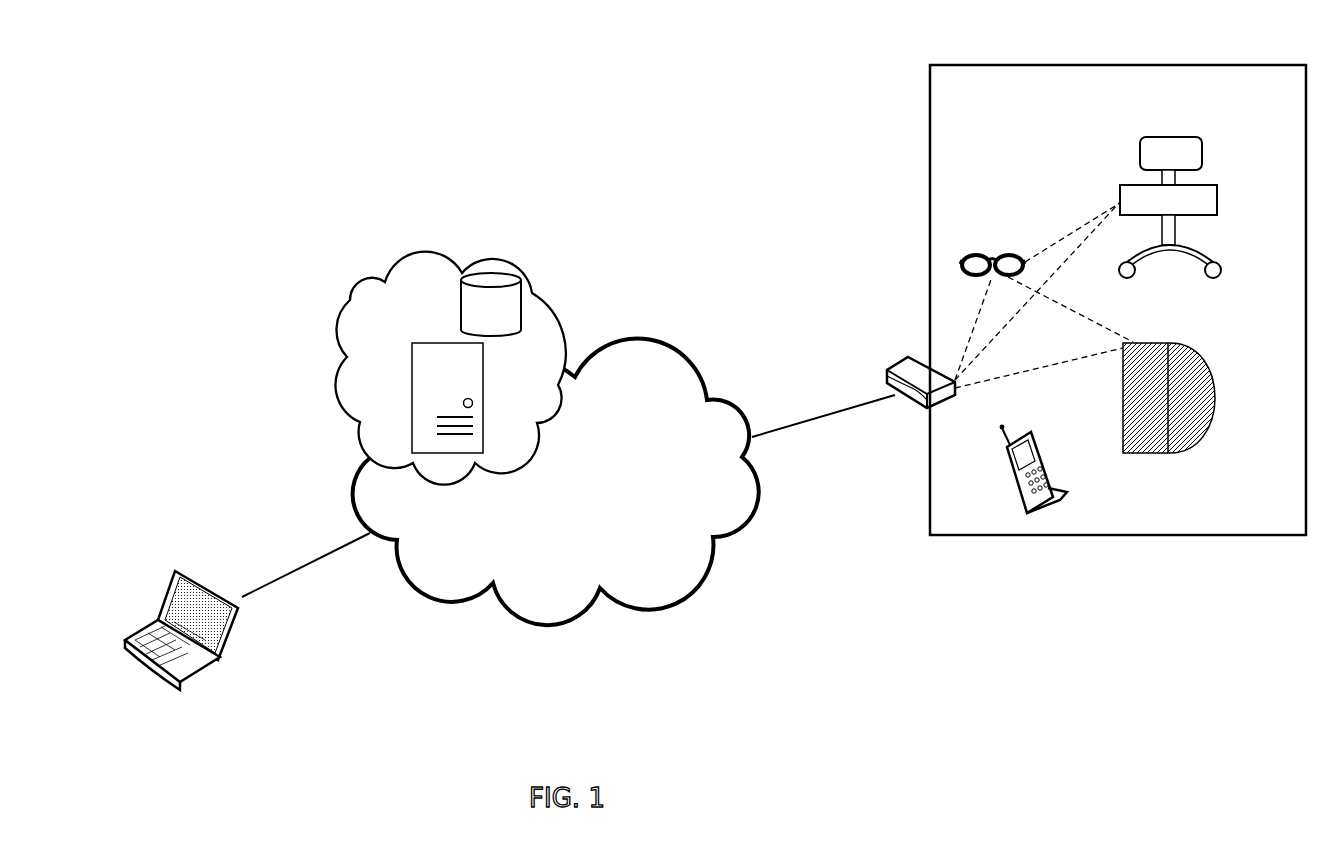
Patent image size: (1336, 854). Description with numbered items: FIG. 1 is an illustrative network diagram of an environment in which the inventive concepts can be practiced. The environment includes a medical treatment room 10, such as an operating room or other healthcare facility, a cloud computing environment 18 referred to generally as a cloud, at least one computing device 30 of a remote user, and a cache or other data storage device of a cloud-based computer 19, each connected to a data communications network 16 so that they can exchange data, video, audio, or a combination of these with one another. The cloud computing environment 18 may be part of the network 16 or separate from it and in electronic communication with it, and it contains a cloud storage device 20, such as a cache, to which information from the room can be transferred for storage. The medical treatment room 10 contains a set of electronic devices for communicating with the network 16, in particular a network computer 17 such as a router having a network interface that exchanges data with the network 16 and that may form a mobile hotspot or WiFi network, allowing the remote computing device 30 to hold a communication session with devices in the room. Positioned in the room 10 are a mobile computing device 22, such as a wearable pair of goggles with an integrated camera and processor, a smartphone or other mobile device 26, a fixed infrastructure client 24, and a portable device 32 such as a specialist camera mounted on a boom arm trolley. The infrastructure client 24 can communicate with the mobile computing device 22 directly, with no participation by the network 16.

The medical treatment room 10 is at (1262, 101).
The data communications network 16 is at (541, 511).
The network computer 17 is at (900, 358).
The cloud computing environment 18 is at (350, 300).
The cloud-based computer 19 is at (483, 428).
The cloud storage device 20 is at (476, 326).
The mobile computing device 22 is at (992, 250).
The infrastructure client 24 is at (1165, 342).
The mobile device 26 is at (1040, 455).
The computing device 30 is at (163, 607).
The portable device 32 is at (1218, 195).